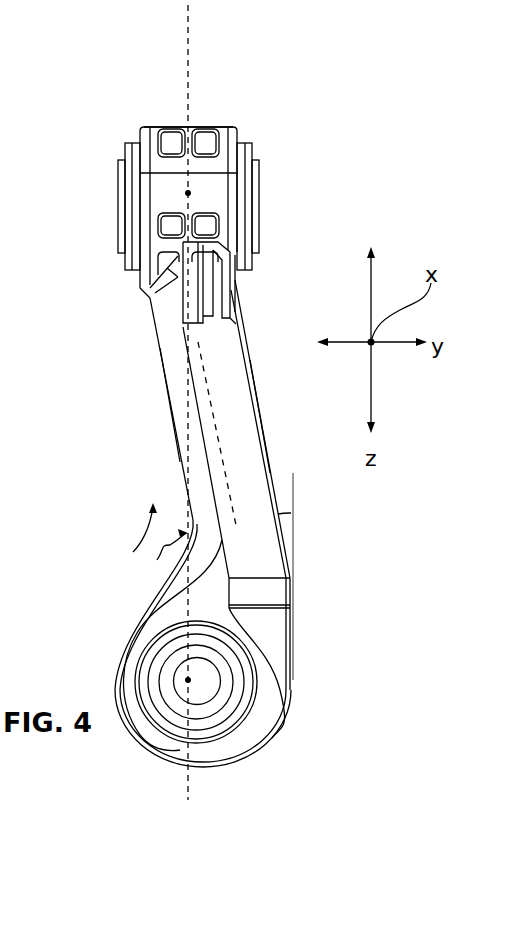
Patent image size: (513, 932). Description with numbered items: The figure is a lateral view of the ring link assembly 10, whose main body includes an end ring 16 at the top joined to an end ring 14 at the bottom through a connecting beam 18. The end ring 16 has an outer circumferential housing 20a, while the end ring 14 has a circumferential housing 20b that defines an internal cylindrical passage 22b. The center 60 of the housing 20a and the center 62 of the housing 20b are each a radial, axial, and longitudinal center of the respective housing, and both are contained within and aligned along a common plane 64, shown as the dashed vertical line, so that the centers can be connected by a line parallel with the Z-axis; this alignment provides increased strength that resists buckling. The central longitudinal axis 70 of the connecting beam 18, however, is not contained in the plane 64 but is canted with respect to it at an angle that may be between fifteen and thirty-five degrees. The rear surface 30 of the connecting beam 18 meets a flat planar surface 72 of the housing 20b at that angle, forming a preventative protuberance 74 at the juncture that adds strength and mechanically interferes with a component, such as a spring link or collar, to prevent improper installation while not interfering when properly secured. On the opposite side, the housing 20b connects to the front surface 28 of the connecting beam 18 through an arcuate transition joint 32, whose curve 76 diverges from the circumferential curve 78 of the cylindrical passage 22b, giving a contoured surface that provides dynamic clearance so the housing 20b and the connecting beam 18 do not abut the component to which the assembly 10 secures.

The ring link assembly 10 is at (253, 117).
The end ring 14 is at (266, 741).
The end ring 16 is at (158, 128).
The connecting beam 18 is at (170, 417).
The outer circumferential housing 20a is at (188, 128).
The circumferential housing 20b is at (157, 752).
The internal cylindrical passage 22b is at (295, 648).
The front surface 28 is at (180, 462).
The rear surface 30 is at (270, 473).
The arcuate transition joint 32 is at (180, 577).
The center 60 is at (188, 193).
The center 62 is at (189, 679).
The common plane 64 is at (188, 34).
The central longitudinal axis 70 is at (217, 428).
The flat planar surface 72 is at (294, 630).
The preventative protuberance 74 is at (293, 578).
The curve 76 is at (148, 533).
The circumferential curve 78 is at (157, 560).